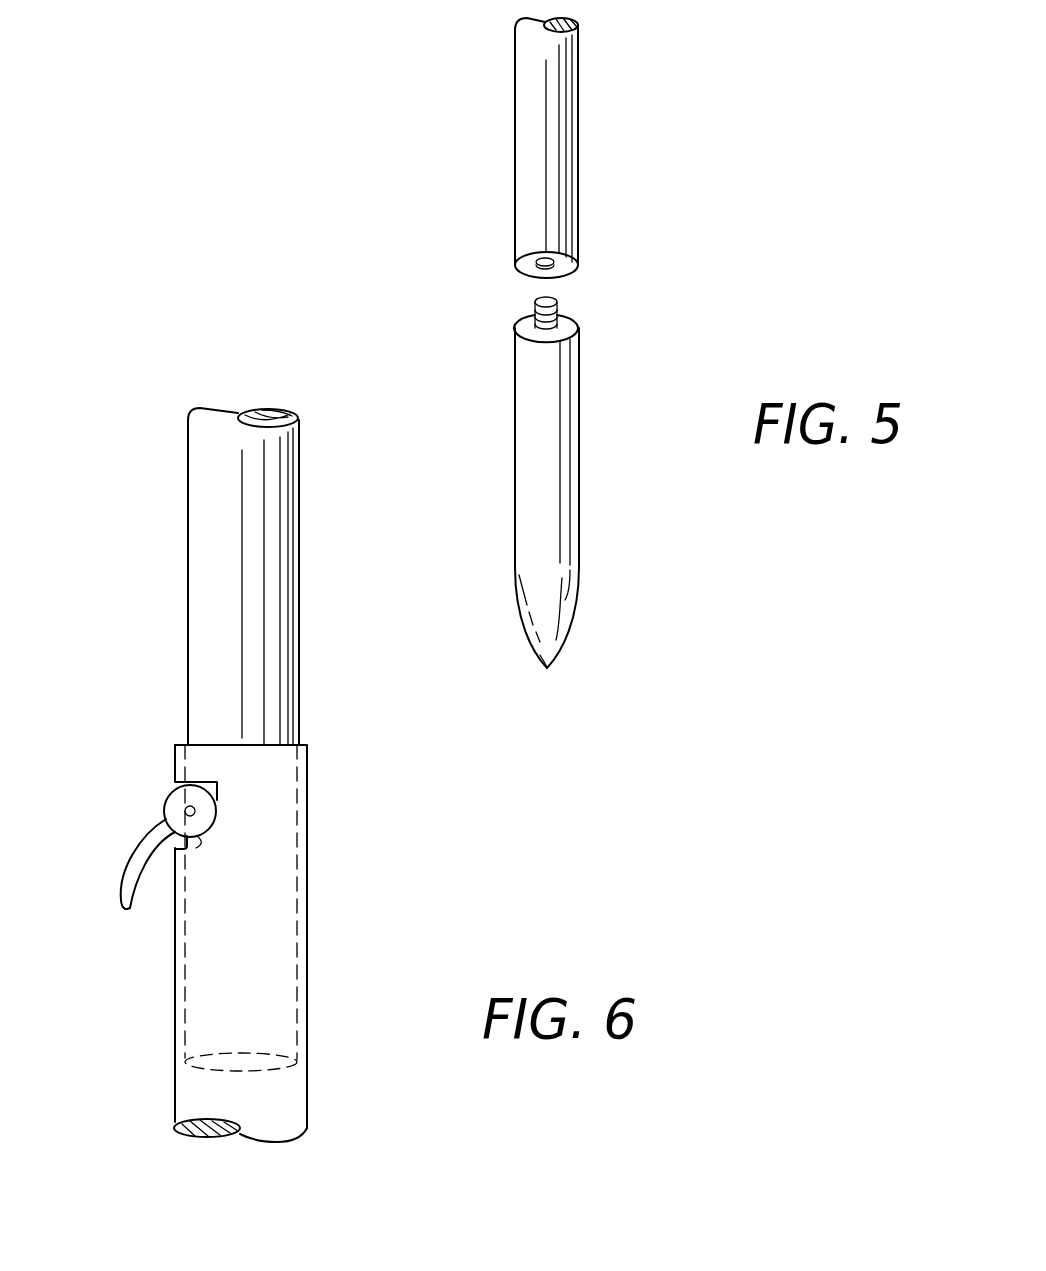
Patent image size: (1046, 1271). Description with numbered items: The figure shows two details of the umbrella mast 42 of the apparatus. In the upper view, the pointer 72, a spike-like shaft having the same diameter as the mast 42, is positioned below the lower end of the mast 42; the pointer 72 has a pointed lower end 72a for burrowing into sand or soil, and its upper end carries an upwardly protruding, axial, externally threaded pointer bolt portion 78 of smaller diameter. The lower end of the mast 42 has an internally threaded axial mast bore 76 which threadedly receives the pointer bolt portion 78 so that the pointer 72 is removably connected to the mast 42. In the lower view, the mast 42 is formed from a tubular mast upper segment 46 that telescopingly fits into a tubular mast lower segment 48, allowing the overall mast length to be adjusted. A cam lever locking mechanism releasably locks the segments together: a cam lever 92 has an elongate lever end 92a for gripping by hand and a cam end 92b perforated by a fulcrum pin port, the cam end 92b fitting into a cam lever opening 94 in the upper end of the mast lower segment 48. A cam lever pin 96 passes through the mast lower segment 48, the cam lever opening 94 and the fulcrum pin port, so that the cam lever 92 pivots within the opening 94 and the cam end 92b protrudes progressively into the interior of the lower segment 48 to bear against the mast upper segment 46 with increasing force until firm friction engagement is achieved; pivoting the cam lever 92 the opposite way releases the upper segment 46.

In FIG. 5, the umbrella mast 42 is at (553, 118).
In FIG. 6, the umbrella mast 42 is at (253, 465).
In FIG. 6, the mast upper segment 46 is at (253, 612).
In FIG. 6, the mast lower segment 48 is at (282, 1097).
In FIG. 5, the pointer 72 is at (545, 418).
In FIG. 5, the pointed lower end 72a is at (547, 659).
In FIG. 5, the mast bore 76 is at (533, 265).
In FIG. 5, the pointer bolt portion 78 is at (558, 303).
In FIG. 6, the cam lever 92 is at (145, 827).
In FIG. 6, the lever end 92a is at (118, 893).
In FIG. 6, the cam end 92b is at (197, 810).
In FIG. 6, the cam lever opening 94 is at (167, 848).
In FIG. 6, the cam lever pin 96 is at (200, 840).